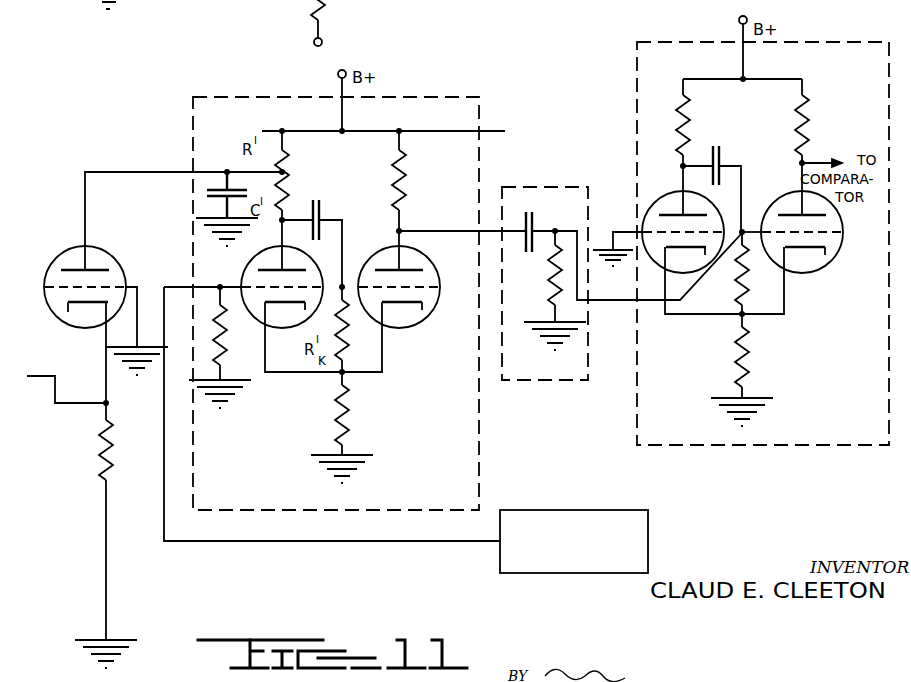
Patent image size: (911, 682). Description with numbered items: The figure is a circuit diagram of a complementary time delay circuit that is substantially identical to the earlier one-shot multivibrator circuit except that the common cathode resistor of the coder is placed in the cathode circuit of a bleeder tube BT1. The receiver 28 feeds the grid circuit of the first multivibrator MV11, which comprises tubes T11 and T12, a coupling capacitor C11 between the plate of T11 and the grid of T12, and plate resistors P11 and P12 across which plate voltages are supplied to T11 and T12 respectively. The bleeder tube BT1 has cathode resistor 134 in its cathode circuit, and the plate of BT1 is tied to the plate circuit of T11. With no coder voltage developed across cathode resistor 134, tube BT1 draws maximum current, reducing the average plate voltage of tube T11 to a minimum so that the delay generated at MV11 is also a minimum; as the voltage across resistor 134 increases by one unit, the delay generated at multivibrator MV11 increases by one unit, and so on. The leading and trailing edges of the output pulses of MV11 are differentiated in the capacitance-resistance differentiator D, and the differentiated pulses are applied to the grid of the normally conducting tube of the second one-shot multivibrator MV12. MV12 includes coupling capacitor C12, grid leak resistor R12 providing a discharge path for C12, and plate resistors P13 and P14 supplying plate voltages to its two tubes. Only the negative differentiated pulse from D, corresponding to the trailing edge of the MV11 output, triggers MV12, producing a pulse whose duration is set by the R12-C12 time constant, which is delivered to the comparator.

The receiver 28 is at (540, 508).
The cathode resistor 134 is at (85, 455).
The bleeder tube BT1 is at (154, 287).
The multivibrator tube T11 is at (248, 270).
The multivibrator tube T12 is at (432, 322).
The plate resistor P11 is at (288, 184).
The plate resistor P12 is at (406, 184).
The coupling capacitor C11 is at (317, 198).
The plate resistor P13 is at (690, 132).
The plate resistor P14 is at (808, 132).
The coupling capacitor C12 is at (712, 145).
The grid leak resistor R12 is at (734, 267).
The differentiator D is at (530, 383).
The multivibrator MV11 is at (335, 291).
The multivibrator MV12 is at (757, 232).